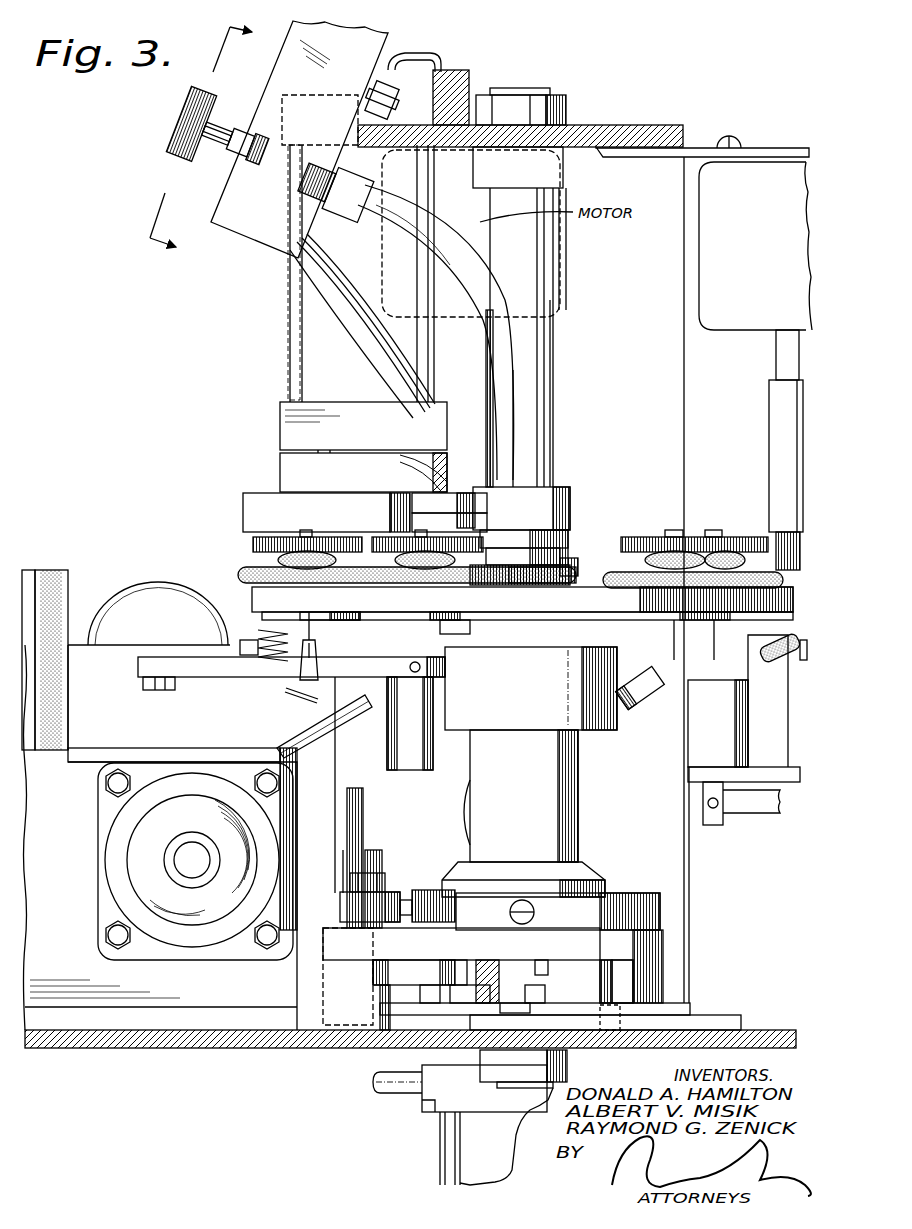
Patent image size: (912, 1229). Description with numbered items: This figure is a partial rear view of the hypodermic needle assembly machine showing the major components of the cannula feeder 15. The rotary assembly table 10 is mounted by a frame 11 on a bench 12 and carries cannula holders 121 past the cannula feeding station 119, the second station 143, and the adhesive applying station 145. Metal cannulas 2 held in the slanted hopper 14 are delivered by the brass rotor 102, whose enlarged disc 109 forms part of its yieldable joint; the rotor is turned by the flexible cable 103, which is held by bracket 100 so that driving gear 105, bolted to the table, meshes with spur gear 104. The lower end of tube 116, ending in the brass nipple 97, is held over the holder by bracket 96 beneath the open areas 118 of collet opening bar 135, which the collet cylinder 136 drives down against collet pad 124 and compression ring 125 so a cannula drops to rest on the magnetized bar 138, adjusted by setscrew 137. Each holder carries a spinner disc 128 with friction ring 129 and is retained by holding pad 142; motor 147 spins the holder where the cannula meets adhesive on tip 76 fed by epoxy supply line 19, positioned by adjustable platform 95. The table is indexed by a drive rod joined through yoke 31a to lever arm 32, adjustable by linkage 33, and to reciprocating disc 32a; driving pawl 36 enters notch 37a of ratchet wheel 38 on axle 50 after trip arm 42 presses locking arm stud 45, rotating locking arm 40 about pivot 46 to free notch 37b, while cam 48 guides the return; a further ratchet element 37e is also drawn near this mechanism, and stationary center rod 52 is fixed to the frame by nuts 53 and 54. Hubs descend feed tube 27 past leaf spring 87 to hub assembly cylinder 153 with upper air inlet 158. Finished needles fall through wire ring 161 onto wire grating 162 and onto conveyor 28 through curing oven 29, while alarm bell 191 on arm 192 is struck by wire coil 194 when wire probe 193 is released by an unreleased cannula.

The rotary assembly table 10 is at (248, 600).
The frame 11 is at (640, 132).
The bench 12 is at (183, 1038).
The cannula hopper 14 is at (375, 30).
The cannula feeder 15 is at (176, 111).
The epoxy supply line 19 is at (773, 662).
The feed tube 27 is at (641, 712).
The conveyor 28 is at (209, 150).
The curing oven 29 is at (30, 568).
The metal cannula 2 is at (255, 108).
The yoke 31a is at (345, 902).
The reciprocating lever arm 32 is at (415, 935).
The reciprocating disc 32a is at (663, 944).
The linkage 33 is at (447, 898).
The driving pawl 36 is at (500, 968).
The notch 37a is at (546, 968).
The notch 37b is at (650, 990).
The pin 37e is at (385, 986).
The ratchet wheel 38 is at (640, 976).
The locking arm 40 is at (690, 1006).
The trip arm 42 is at (432, 976).
The locking arm stud 45 is at (545, 993).
The pivot 46 is at (600, 1016).
The cam 48 is at (462, 990).
The axle 50 is at (558, 834).
The stationary center rod 52 is at (527, 343).
The nut 53 is at (550, 107).
The nut 54 is at (522, 1058).
The tip 76 is at (738, 701).
The leaf spring 87 is at (462, 812).
The adjustable platform 95 is at (793, 800).
The bracket 96 is at (290, 468).
The brass nipple 97 is at (445, 520).
The bracket 100 is at (555, 497).
The brass rotor 102 is at (216, 148).
The flexible cable 103 is at (513, 408).
The spur gear 104 is at (530, 575).
The driving gear 105 is at (578, 572).
The enlarged disc 109 is at (172, 136).
The tube 116 is at (338, 292).
The open areas 118 is at (445, 502).
The cannula feeding station 119 is at (368, 594).
The cannula holder 121 is at (379, 536).
The collet pad 124 is at (253, 543).
The resilient compression ring 125 is at (278, 560).
The spinner disc 128 is at (392, 587).
The friction ring 129 is at (238, 575).
The collet opening bar 135 is at (252, 503).
The collet cylinder 136 is at (318, 350).
The setscrew 137 is at (446, 668).
The magnetized bar 138 is at (432, 714).
The holding pad 142 is at (462, 627).
The second station 143 is at (671, 536).
The adhesive applying station 145 is at (714, 535).
The motor 147 is at (736, 322).
The hub assembly cylinder 153 is at (465, 1158).
The upper air inlet 158 is at (405, 1085).
The wire ring 161 is at (314, 703).
The wire grating 162 is at (290, 738).
The alarm bell 191 is at (125, 600).
The arm 192 is at (192, 672).
The wire probe 193 is at (365, 650).
The wire coil 194 is at (300, 660).